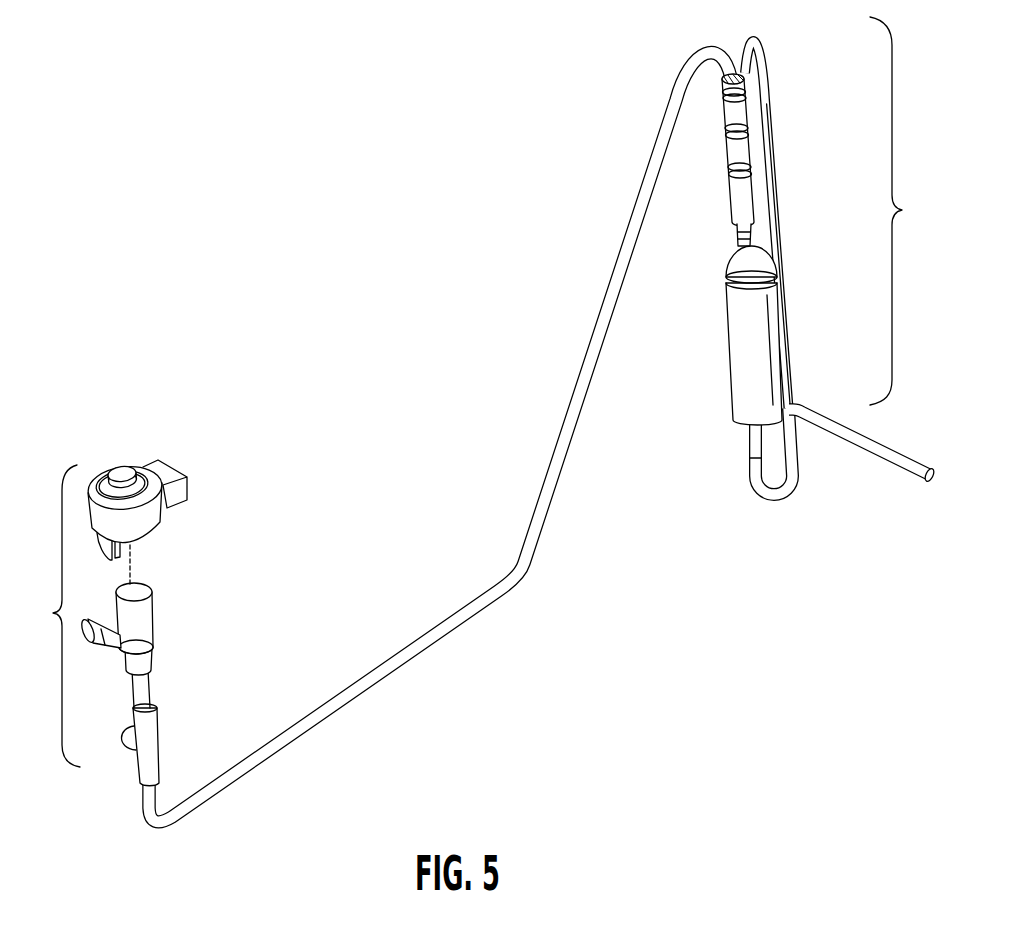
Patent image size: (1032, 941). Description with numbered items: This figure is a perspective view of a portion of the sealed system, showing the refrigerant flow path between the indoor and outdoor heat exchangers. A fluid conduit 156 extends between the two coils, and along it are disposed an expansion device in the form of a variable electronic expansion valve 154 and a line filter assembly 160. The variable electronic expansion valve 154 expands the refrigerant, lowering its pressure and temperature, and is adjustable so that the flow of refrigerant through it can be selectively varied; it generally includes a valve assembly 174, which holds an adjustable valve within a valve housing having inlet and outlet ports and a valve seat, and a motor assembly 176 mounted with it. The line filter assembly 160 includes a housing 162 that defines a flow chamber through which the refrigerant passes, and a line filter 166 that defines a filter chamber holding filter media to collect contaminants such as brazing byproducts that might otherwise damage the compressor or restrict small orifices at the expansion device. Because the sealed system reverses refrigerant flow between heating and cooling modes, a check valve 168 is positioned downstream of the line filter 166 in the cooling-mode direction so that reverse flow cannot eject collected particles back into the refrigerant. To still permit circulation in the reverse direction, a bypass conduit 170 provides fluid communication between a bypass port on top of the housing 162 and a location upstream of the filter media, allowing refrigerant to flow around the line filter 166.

The variable electronic expansion valve 154 is at (122, 580).
The fluid conduit 156 is at (463, 605).
The line filter assembly 160 is at (750, 256).
The housing 162 is at (716, 160).
The line filter 166 is at (742, 345).
The check valve 168 is at (718, 151).
The bypass conduit 170 is at (770, 140).
The valve assembly 174 is at (140, 632).
The motor assembly 176 is at (167, 475).